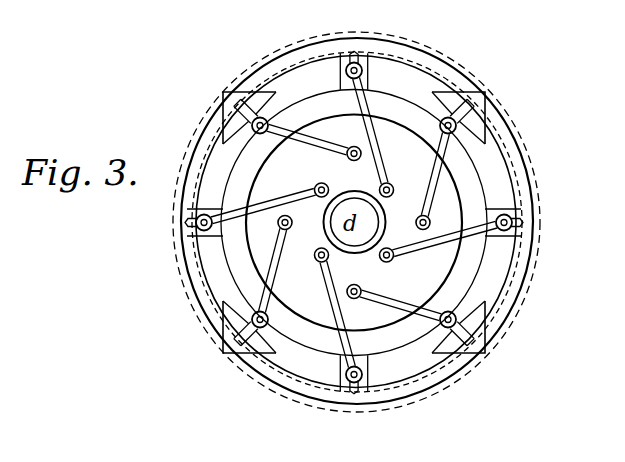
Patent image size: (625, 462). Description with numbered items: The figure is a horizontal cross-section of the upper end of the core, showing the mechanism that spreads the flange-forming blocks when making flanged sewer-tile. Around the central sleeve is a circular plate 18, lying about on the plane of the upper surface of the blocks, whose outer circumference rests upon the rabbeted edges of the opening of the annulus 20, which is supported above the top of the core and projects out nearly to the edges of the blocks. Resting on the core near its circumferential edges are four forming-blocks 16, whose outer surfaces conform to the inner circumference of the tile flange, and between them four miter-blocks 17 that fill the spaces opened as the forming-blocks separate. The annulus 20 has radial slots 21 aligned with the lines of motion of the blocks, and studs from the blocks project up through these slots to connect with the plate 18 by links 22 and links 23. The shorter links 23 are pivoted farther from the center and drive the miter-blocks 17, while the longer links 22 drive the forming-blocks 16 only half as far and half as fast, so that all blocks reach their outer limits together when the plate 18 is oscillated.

The forming-blocks 16 is at (372, 52).
The miter-blocks 17 is at (238, 142).
The circular plate 18 is at (354, 223).
The annulus 20 is at (240, 260).
The radial slots 21 is at (366, 63).
The links 22 is at (368, 144).
The links 23 is at (400, 307).